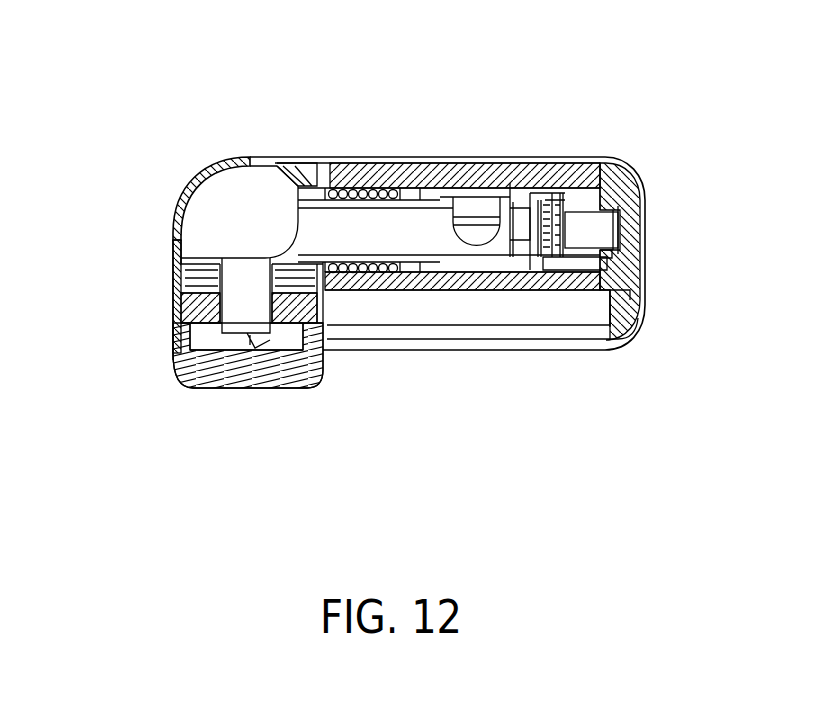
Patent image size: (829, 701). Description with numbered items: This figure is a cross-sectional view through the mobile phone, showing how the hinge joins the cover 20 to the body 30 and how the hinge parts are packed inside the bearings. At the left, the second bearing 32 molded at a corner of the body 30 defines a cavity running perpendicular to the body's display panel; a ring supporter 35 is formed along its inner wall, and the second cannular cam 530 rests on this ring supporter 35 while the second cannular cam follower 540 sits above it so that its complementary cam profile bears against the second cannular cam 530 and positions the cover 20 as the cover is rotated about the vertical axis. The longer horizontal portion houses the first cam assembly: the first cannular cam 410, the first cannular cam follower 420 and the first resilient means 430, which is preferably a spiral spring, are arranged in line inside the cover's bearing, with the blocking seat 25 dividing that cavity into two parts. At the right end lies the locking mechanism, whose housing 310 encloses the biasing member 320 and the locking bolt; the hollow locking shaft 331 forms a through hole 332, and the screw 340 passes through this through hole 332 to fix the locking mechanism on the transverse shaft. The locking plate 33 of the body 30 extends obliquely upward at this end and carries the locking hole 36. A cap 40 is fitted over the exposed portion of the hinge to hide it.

The cover 20 is at (531, 160).
The blocking seat 25 is at (534, 195).
The body 30 is at (450, 332).
The second bearing 32 is at (300, 372).
The locking plate 33 is at (633, 202).
The ring supporter 35 is at (176, 362).
The locking hole 36 is at (593, 232).
The cap 40 is at (203, 170).
The housing 310 is at (586, 175).
The biasing member 320 is at (548, 190).
The locking shaft 331 is at (627, 295).
The through hole 332 is at (622, 240).
The screw 340 is at (533, 225).
The first cannular cam 410 is at (428, 157).
The first cannular cam follower 420 is at (392, 157).
The first resilient means 430 is at (342, 158).
The second cannular cam 530 is at (173, 308).
The second cannular cam follower 540 is at (173, 298).